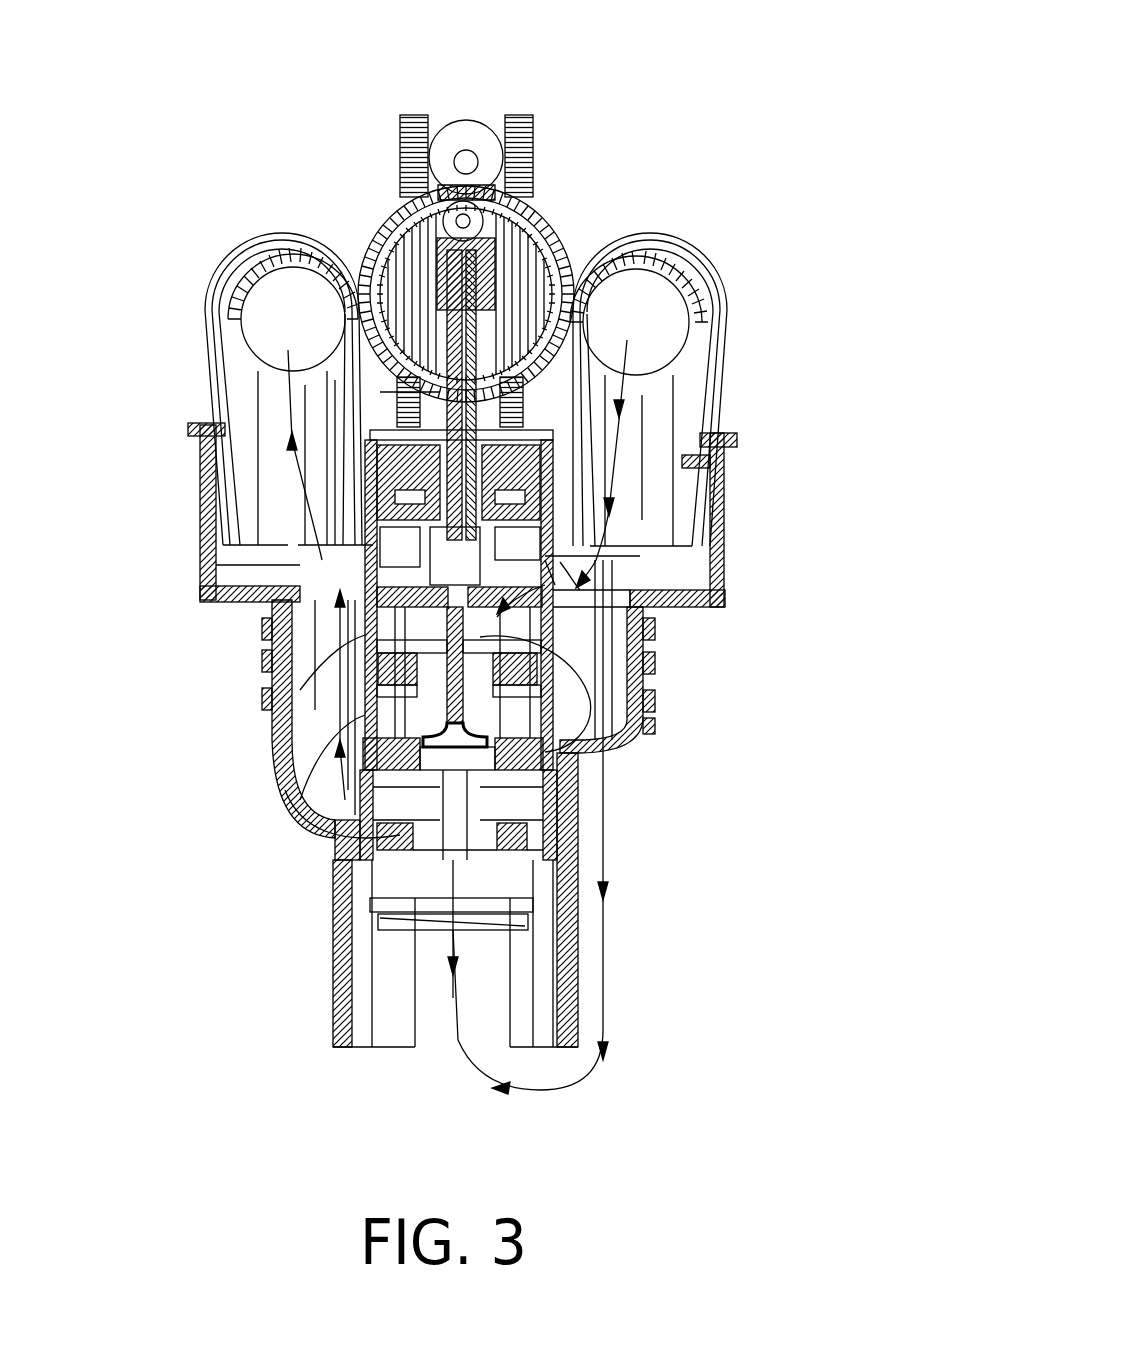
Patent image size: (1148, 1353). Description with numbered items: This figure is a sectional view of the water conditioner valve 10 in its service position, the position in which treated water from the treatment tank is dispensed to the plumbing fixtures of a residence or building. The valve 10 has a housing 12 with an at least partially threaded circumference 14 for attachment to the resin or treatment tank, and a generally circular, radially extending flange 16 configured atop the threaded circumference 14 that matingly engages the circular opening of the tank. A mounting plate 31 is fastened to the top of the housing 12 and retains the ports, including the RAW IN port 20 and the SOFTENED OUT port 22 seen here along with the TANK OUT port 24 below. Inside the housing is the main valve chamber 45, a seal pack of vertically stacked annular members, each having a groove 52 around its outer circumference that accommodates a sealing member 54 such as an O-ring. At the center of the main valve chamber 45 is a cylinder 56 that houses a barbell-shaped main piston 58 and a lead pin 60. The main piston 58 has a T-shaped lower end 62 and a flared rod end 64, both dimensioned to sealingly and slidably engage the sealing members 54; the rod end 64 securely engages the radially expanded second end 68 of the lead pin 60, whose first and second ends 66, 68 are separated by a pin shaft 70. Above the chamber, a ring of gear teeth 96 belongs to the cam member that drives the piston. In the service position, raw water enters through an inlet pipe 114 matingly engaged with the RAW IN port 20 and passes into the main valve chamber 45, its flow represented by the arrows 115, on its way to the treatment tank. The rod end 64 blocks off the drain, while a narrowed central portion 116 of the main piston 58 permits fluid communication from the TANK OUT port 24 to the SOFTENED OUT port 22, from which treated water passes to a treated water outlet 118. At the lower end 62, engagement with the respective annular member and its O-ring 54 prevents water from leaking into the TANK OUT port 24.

The water conditioner valve 10 is at (724, 84).
The housing 12 is at (590, 985).
The partially threaded circumference 14 is at (655, 672).
The flange 16 is at (690, 612).
The RAW IN port 20 is at (735, 470).
The SOFTENED OUT port 22 is at (257, 497).
The TANK OUT port 24 is at (408, 1047).
The mounting plate 31 is at (735, 432).
The main valve chamber 45 is at (365, 548).
The groove 52 is at (355, 598).
The sealing member 54 is at (368, 600).
The cylinder 56 is at (565, 742).
The main piston 58 is at (368, 652).
The lead pin 60 is at (540, 238).
The lower end 62 is at (480, 788).
The rod end 64 is at (560, 562).
The first end 66 is at (466, 298).
The second end 68 is at (724, 598).
The pin shaft 70 is at (515, 390).
The ring of gear teeth 96 is at (495, 235).
The inlet pipe 114 is at (690, 250).
The arrows 115 is at (290, 425).
The narrowed central portion 116 is at (365, 700).
The treated water outlet 118 is at (262, 244).